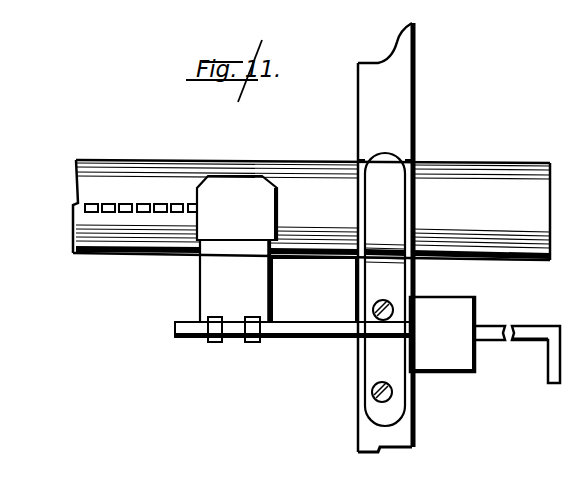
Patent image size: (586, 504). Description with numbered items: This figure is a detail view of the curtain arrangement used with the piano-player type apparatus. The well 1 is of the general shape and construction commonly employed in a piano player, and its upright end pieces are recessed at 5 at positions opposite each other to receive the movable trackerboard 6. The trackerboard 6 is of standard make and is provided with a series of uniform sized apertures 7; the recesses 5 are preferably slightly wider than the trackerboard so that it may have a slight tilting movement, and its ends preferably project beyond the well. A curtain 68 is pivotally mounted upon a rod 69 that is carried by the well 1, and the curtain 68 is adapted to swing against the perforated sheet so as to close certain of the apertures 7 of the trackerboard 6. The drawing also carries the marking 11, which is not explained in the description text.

The well 1 is at (400, 72).
The recess 5 is at (413, 156).
The trackerboard 6 is at (311, 211).
The apertures 7 is at (127, 203).
The slot opening 11 is at (396, 178).
The curtain 68 is at (237, 249).
The rod 69 is at (318, 328).